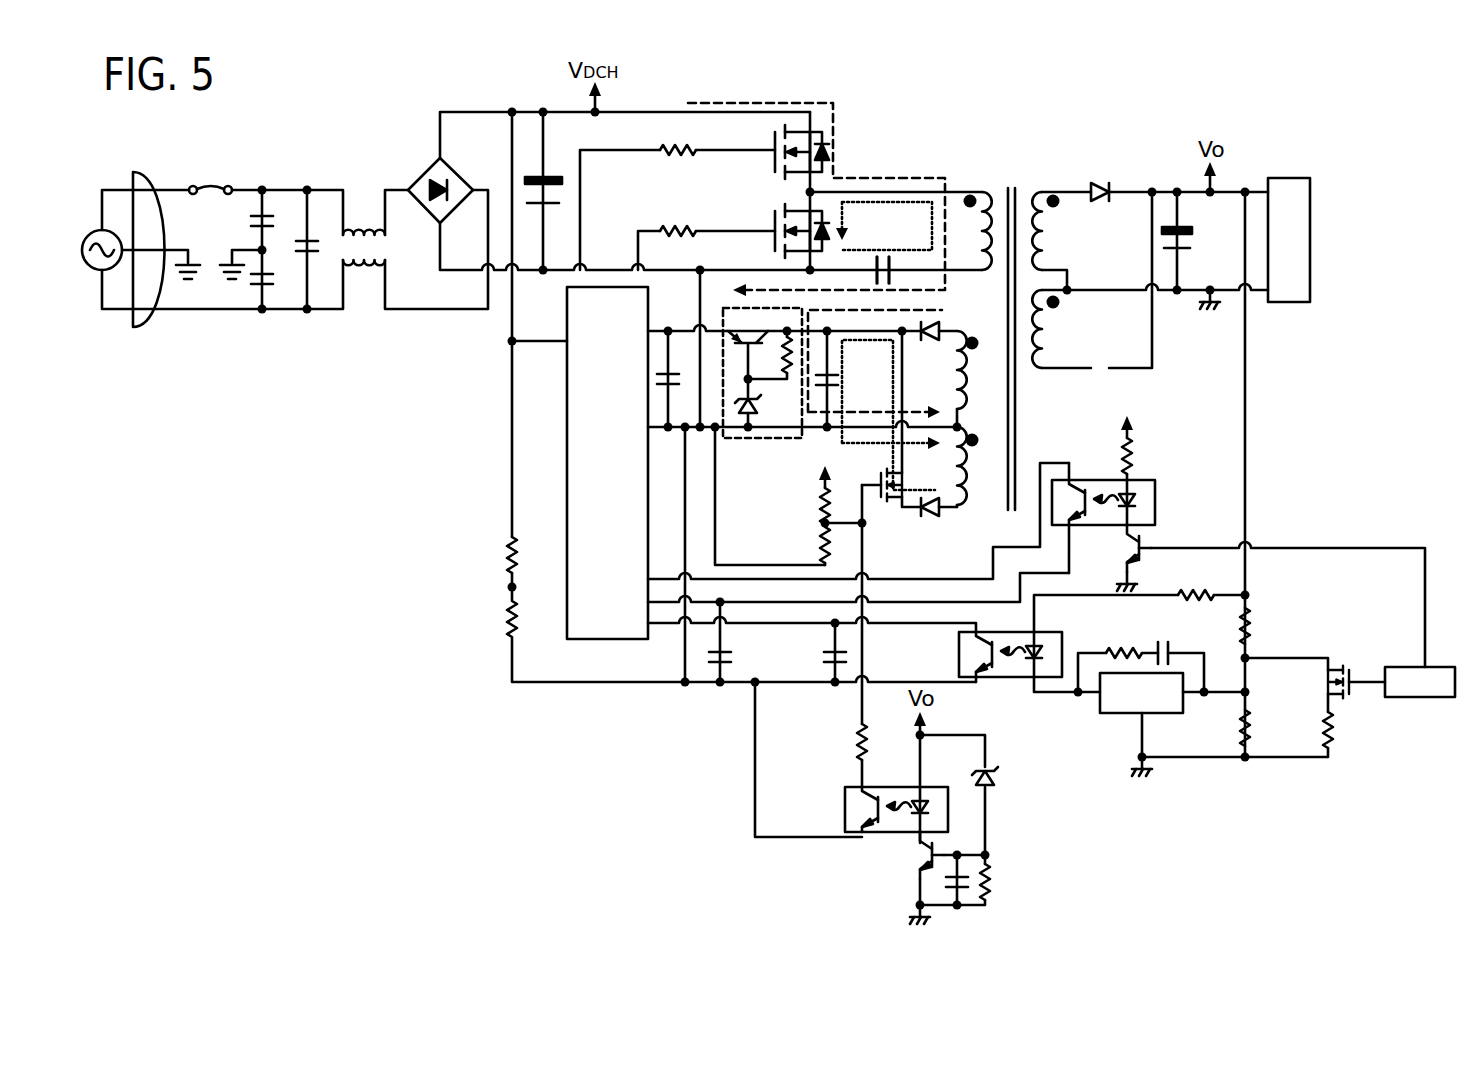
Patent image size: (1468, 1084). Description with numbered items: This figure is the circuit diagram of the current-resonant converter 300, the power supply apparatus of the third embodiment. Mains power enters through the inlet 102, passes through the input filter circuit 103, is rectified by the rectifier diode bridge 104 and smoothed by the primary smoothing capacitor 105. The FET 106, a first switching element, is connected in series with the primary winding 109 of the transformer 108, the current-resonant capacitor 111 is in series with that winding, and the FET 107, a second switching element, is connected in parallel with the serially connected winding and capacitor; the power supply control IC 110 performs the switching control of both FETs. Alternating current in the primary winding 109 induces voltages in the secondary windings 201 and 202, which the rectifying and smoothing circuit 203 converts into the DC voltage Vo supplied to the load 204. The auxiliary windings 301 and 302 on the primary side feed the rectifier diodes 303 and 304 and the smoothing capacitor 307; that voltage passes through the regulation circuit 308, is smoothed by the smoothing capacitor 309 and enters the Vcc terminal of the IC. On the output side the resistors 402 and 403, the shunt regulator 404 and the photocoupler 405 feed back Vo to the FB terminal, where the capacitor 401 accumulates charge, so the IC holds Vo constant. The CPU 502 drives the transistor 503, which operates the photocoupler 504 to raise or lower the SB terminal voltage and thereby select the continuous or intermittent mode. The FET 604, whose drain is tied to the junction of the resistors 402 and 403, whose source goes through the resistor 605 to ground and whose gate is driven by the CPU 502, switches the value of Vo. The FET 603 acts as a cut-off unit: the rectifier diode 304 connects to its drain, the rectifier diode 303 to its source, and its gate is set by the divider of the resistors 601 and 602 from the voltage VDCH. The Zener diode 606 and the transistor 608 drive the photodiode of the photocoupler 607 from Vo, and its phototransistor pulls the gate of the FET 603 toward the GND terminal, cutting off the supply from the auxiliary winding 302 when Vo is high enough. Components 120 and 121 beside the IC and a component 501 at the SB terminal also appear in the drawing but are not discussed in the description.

The inlet 102 is at (134, 176).
The input filter circuit 103 is at (315, 177).
The rectifier diode bridge 104 is at (414, 174).
The primary smoothing capacitor 105 is at (562, 196).
The FET 106 is at (766, 164).
The FET 107 is at (766, 215).
The transformer 108 is at (1016, 180).
The primary winding 109 is at (975, 180).
The power supply control IC 110 is at (562, 634).
The current-resonant capacitor 111 is at (880, 258).
The resistor 120 is at (508, 554).
The resistor 121 is at (508, 622).
The secondary winding 201 is at (1046, 256).
The secondary winding 202 is at (1046, 346).
The rectifying and smoothing circuit 203 is at (1131, 180).
The load 204 is at (1282, 178).
The current-resonant converter 300 is at (903, 116).
The auxiliary winding 301 is at (964, 398).
The auxiliary winding 302 is at (964, 509).
The rectifier diode 303 is at (942, 324).
The rectifier diode 304 is at (947, 516).
The smoothing capacitor 307 is at (832, 378).
The regulation circuit 308 is at (749, 444).
The smoothing capacitor 309 is at (664, 442).
The capacitor 401 is at (830, 672).
The resistor 402 is at (1259, 614).
The resistor 403 is at (1253, 726).
The shunt regulator 404 is at (1108, 716).
The photocoupler 405 is at (1070, 644).
The capacitor 501 is at (738, 654).
The CPU 502 is at (1418, 668).
The transistor 503 is at (1152, 544).
The photocoupler 504 is at (1153, 478).
The resistor 601 is at (812, 520).
The resistor 602 is at (812, 552).
The FET 603 is at (890, 510).
The FET 604 is at (1344, 654).
The resistor 605 is at (1348, 730).
The Zener diode 606 is at (984, 766).
The photocoupler 607 is at (835, 804).
The transistor 608 is at (914, 868).